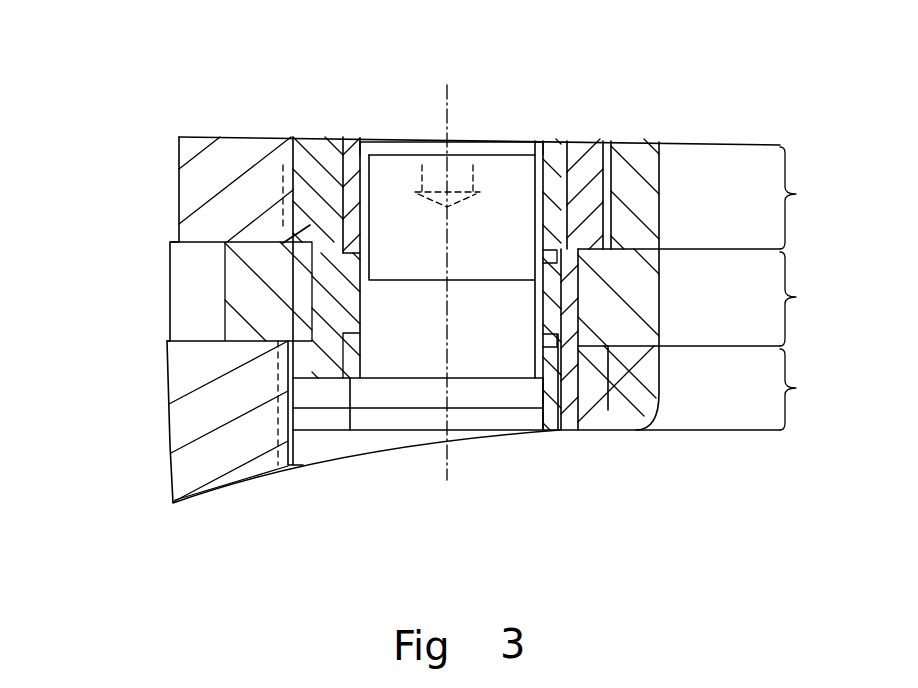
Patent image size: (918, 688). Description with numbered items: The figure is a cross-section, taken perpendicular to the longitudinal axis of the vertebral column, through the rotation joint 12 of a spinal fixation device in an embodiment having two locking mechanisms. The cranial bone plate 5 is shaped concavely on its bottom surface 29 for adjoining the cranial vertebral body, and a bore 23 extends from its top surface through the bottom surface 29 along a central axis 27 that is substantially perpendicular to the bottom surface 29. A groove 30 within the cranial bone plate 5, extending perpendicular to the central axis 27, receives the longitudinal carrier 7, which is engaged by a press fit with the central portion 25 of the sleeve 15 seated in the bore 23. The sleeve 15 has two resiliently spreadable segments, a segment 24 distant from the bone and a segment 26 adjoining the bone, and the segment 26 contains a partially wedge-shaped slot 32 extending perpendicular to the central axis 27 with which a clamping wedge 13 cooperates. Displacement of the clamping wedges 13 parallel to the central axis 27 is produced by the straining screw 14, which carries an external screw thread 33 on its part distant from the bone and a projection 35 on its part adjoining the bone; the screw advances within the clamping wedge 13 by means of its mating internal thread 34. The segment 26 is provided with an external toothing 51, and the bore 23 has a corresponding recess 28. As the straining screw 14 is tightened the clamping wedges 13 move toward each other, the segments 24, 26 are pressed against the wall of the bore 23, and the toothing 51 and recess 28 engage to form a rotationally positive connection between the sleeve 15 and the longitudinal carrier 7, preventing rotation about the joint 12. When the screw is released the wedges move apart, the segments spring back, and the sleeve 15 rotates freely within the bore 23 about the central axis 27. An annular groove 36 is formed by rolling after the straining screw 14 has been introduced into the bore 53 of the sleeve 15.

The cranial bone plate 5 is at (185, 415).
The longitudinal carrier 7 is at (658, 297).
The joint 12 is at (350, 112).
The clamping wedge 13 is at (555, 140).
The straining screw 14 is at (417, 422).
The sleeve 15 is at (588, 140).
The bore 23 is at (320, 447).
The resiliently spreadable segment 24 is at (815, 198).
The central portion 25 is at (815, 299).
The segment adjoining the bone 26 is at (815, 389).
The central axis 27 is at (450, 95).
The recess 28 is at (286, 197).
The bottom surface 29 is at (232, 487).
The groove 30 is at (190, 268).
The partially wedge-shaped slot 32 is at (548, 254).
The external screw thread 33 is at (362, 190).
The internal thread 34 is at (350, 137).
The projection 35 is at (363, 395).
The annular groove 36 is at (355, 378).
The external toothing 51 is at (637, 142).
The bore of the sleeve 53 is at (413, 139).